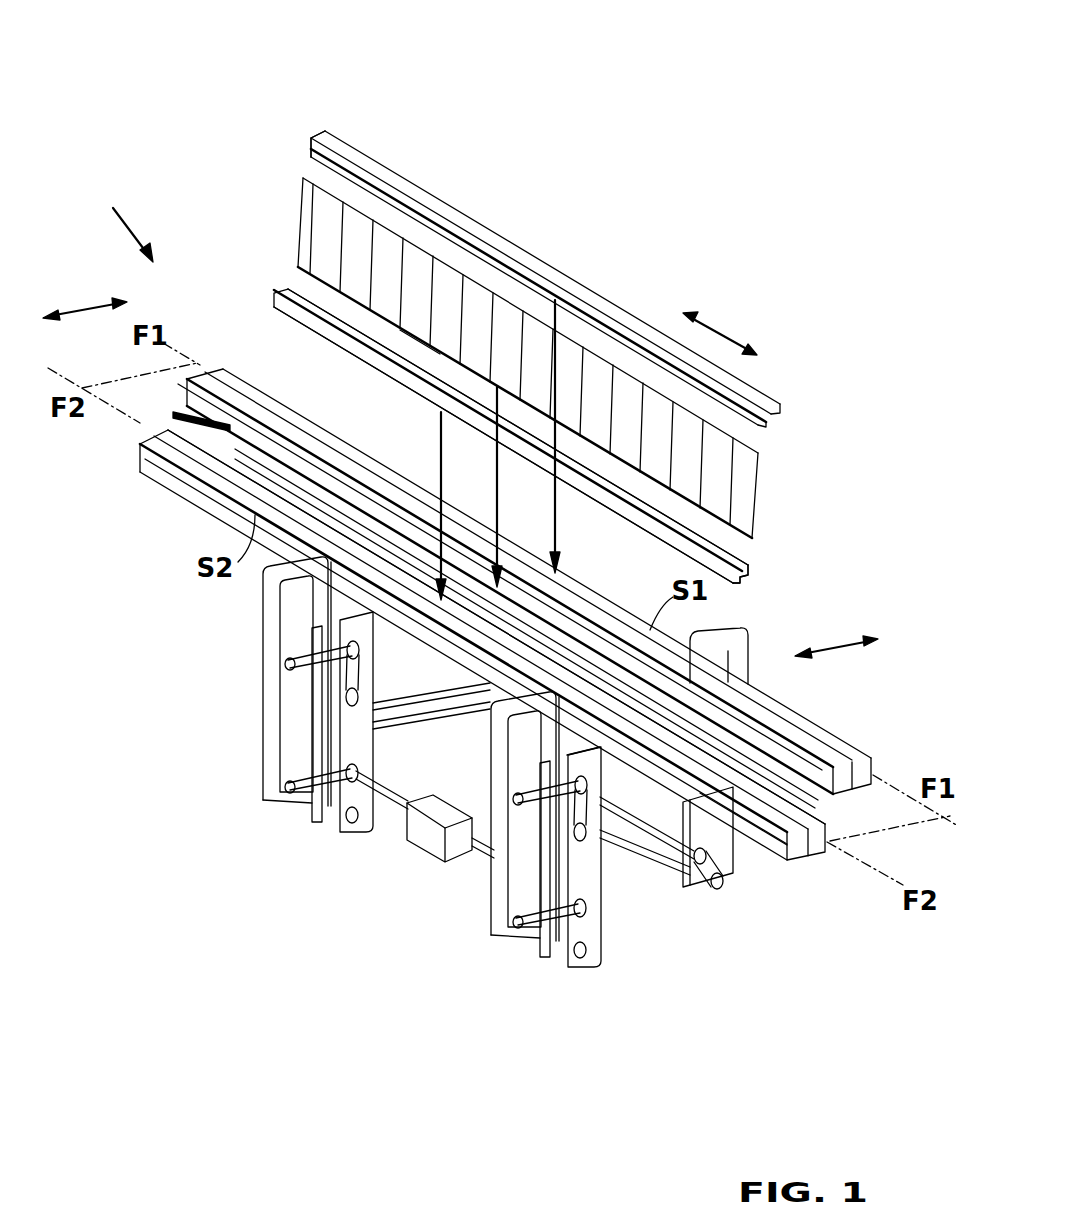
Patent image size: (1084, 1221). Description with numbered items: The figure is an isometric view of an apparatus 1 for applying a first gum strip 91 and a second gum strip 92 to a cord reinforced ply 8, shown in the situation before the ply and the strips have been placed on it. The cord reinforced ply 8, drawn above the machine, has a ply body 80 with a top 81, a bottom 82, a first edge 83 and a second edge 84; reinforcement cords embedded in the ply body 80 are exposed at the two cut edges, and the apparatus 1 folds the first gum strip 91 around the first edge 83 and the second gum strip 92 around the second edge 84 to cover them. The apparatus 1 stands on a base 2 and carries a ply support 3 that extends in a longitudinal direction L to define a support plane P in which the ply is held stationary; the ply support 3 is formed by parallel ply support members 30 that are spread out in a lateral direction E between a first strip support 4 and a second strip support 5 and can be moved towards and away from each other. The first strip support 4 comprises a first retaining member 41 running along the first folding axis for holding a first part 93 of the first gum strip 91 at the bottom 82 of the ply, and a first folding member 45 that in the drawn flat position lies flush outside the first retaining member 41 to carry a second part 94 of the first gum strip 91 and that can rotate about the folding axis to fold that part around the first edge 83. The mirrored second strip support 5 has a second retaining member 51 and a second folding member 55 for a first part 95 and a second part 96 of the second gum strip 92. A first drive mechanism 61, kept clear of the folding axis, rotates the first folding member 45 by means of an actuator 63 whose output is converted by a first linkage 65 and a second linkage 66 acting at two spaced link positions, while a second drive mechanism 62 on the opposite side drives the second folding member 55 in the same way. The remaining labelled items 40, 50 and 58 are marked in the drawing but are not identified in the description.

The apparatus 1 is at (126, 218).
The base 2 is at (597, 912).
The ply support 3 is at (177, 413).
The first strip support 4 is at (549, 549).
The second strip support 5 is at (215, 500).
The cord reinforced ply 8 is at (534, 323).
The ply support members 30 is at (297, 447).
The pressing direction arrows 40 is at (398, 483).
The first retaining member 41 is at (837, 768).
The first folding member 45 is at (877, 765).
The lower beam 50 is at (484, 667).
The second retaining member 51 is at (813, 823).
The second folding member 55 is at (783, 850).
The connecting links 58 is at (335, 600).
The first drive mechanism 61 is at (742, 640).
The second drive mechanism 62 is at (327, 800).
The actuator 63 is at (430, 838).
The first linkage 65 is at (333, 820).
The second linkage 66 is at (277, 735).
The ply body 80 is at (563, 323).
The top 81 is at (387, 257).
The bottom 82 is at (735, 490).
The first edge 83 is at (507, 300).
The second edge 84 is at (420, 342).
The first gum strip 91 is at (612, 308).
The second gum strip 92 is at (638, 522).
The first part of the first gum strip 93 is at (311, 143).
The second part of the first gum strip 94 is at (352, 156).
The first part of the second gum strip 95 is at (748, 568).
The second part of the second gum strip 96 is at (578, 487).
The lateral direction E is at (460, 466).
The longitudinal direction L is at (720, 321).
The support plane P is at (130, 407).